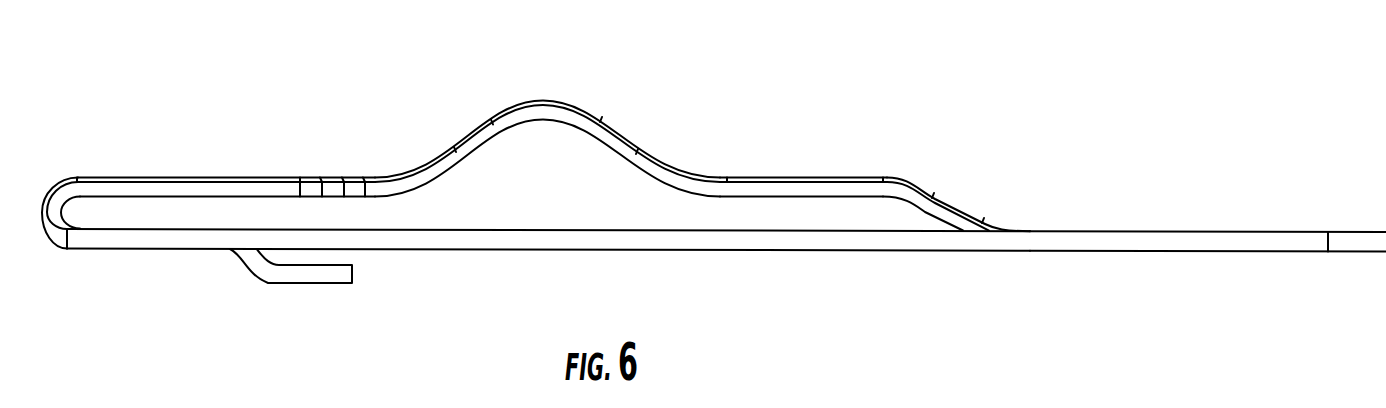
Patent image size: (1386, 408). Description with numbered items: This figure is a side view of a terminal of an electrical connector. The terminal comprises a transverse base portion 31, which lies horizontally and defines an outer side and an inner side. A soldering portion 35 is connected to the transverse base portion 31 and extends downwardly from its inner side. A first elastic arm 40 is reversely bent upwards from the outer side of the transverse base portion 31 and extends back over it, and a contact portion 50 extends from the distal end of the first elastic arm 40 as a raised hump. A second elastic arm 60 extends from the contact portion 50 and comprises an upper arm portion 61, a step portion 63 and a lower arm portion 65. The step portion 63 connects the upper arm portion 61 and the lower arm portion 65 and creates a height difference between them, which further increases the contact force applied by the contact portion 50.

The transverse base portion 31 is at (147, 240).
The soldering portion 35 is at (308, 285).
The first elastic arm 40 is at (288, 161).
The contact portion 50 is at (542, 101).
The second elastic arm 60 is at (1152, 150).
The upper arm portion 61 is at (789, 162).
The step portion 63 is at (970, 190).
The lower arm portion 65 is at (1092, 228).